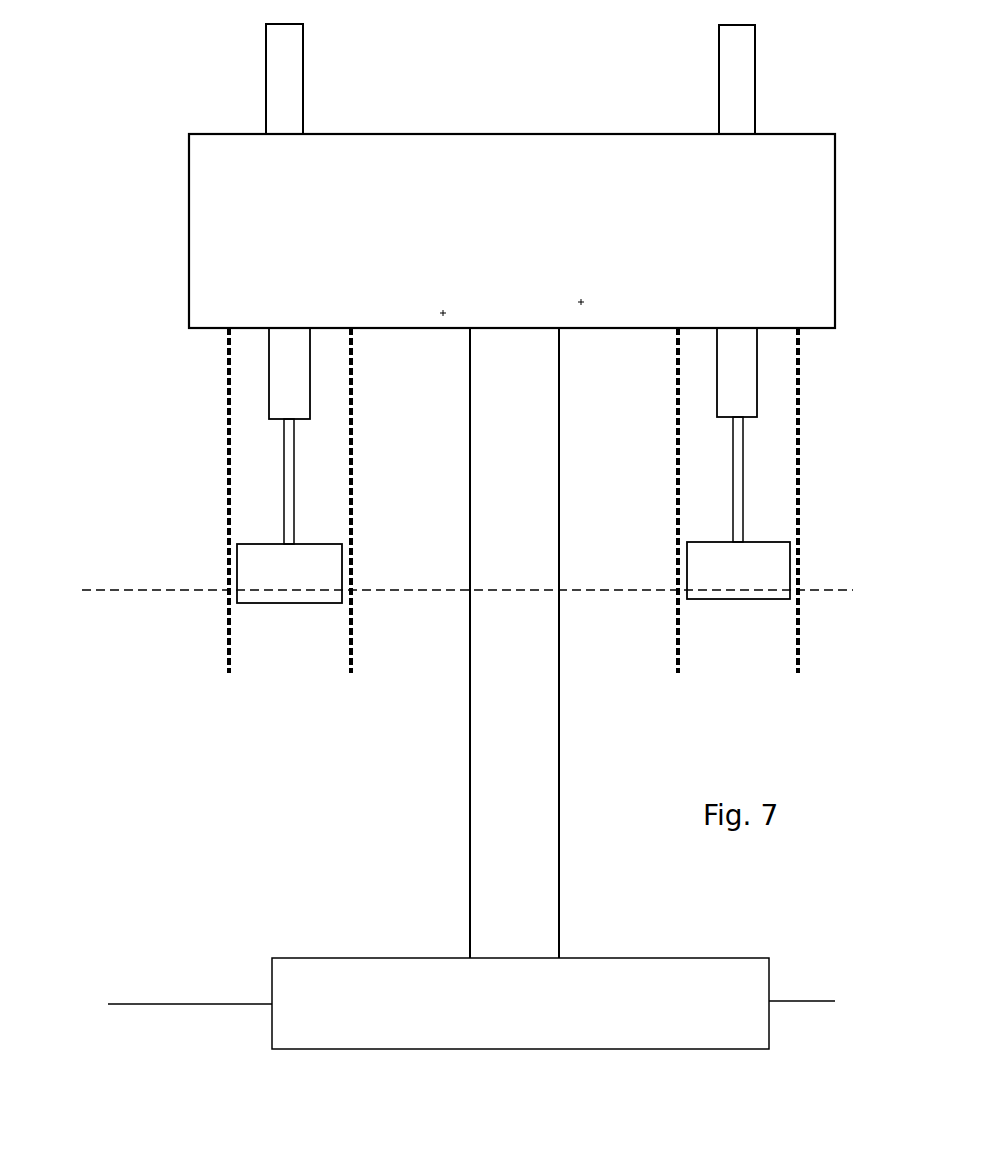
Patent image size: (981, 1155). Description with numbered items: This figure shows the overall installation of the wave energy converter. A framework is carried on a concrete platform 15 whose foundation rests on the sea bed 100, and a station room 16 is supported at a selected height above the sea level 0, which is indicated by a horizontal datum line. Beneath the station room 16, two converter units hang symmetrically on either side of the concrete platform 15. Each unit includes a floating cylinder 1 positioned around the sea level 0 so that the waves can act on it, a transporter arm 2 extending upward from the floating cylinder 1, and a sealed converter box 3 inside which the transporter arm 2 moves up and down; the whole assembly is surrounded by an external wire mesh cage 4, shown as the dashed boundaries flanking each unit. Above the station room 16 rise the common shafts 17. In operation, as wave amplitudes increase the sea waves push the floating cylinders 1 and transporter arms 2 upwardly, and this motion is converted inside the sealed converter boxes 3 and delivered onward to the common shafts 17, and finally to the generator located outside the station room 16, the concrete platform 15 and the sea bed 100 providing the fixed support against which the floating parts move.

The sea level 0 is at (137, 590).
The floating cylinder 1 is at (304, 577).
The transporter arm 2 is at (283, 536).
The sealed converter box 3 is at (298, 378).
The external wire mesh cage 4 is at (228, 373).
The concrete platform 15 is at (507, 733).
The station room 16 is at (605, 147).
The common shaft 17 is at (719, 43).
The sea bed 100 is at (150, 997).